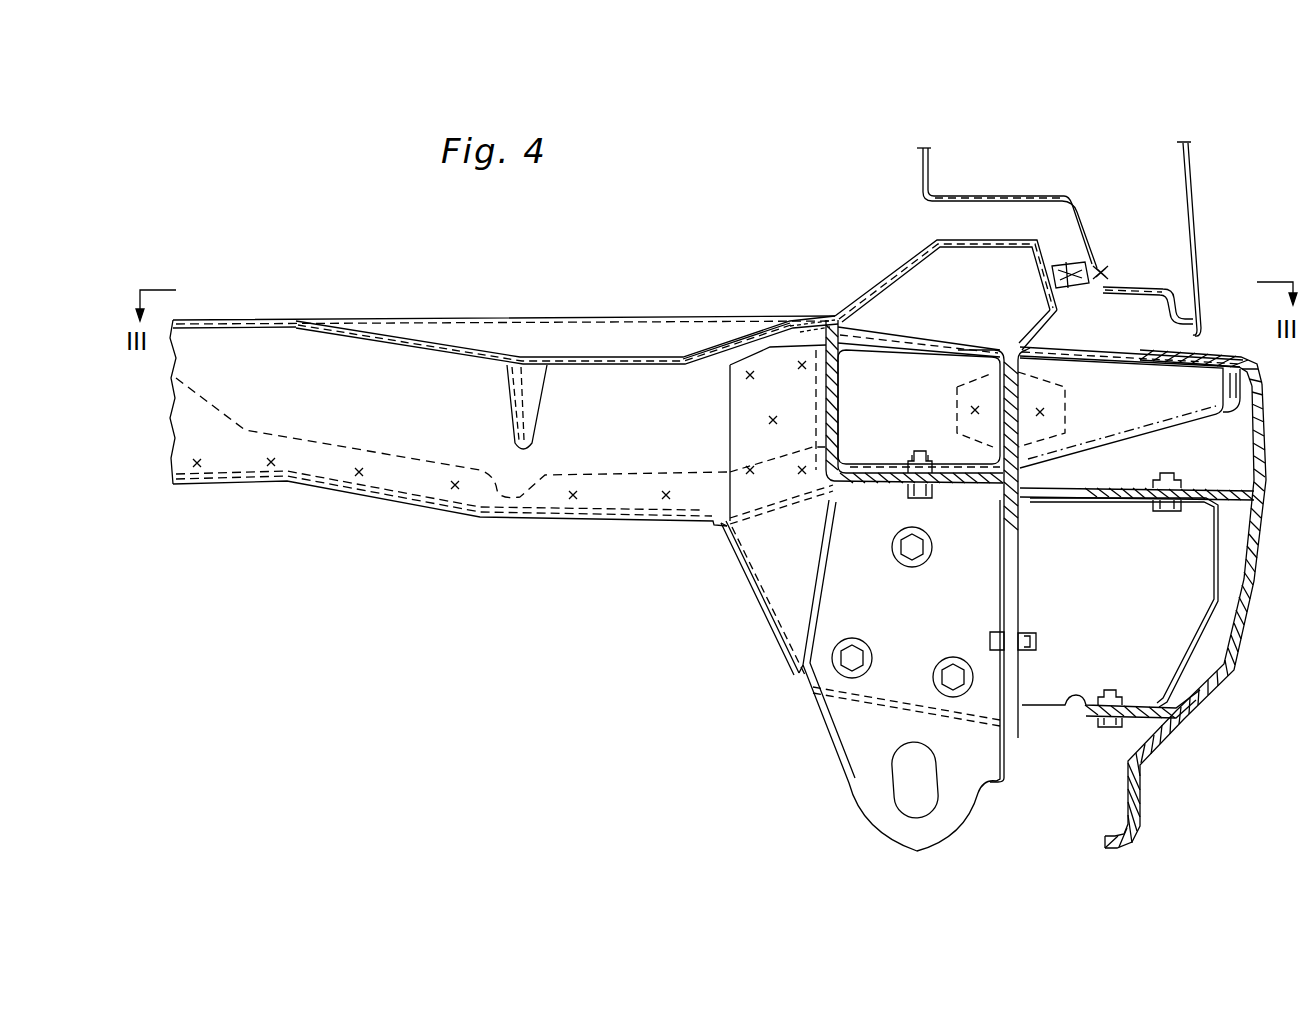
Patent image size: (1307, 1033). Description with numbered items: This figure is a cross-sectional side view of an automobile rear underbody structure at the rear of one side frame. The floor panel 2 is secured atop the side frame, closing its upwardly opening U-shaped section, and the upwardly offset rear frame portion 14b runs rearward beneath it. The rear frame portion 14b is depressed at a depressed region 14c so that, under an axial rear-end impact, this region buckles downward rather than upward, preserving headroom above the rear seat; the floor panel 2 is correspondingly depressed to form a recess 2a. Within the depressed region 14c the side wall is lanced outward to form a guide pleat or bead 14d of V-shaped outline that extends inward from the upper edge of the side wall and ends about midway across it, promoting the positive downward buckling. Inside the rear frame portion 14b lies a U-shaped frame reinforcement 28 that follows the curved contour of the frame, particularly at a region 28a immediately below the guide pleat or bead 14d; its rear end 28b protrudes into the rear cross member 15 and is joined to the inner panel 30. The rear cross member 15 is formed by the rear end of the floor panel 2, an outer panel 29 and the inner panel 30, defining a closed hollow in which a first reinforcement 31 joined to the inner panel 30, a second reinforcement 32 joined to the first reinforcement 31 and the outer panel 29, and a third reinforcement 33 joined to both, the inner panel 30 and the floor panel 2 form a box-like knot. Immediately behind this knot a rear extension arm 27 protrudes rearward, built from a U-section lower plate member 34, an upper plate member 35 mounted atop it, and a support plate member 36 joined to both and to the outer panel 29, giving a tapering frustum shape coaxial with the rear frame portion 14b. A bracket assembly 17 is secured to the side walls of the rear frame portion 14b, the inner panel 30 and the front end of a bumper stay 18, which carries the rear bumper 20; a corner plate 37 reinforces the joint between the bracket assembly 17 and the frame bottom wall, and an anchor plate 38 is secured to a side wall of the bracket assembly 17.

The floor panel 2 is at (300, 319).
The recess 2a is at (613, 357).
The rear frame portion 14b is at (252, 485).
The depressed region 14c is at (645, 362).
The guide pleat or bead 14d is at (540, 410).
The rear cross member 15 is at (1013, 238).
The bracket assembly 17 is at (770, 582).
The bumper stay 18 is at (1058, 704).
The rear bumper 20 is at (1232, 665).
The rear extension arm 27 is at (1169, 239).
The frame reinforcement 28 is at (418, 482).
The region of frame reinforcement 28a is at (495, 470).
The rear end of reinforcement 28b is at (834, 485).
The outer panel 29 is at (1042, 334).
The inner panel 30 is at (912, 462).
The first reinforcement 31 is at (940, 488).
The second reinforcement 32 is at (1002, 352).
The third reinforcement 33 is at (905, 348).
The lower plate member 34 is at (1148, 418).
The upper plate member 35 is at (1098, 356).
The support plate member 36 is at (1068, 352).
The corner plate 37 is at (733, 557).
The anchor plate 38 is at (880, 812).